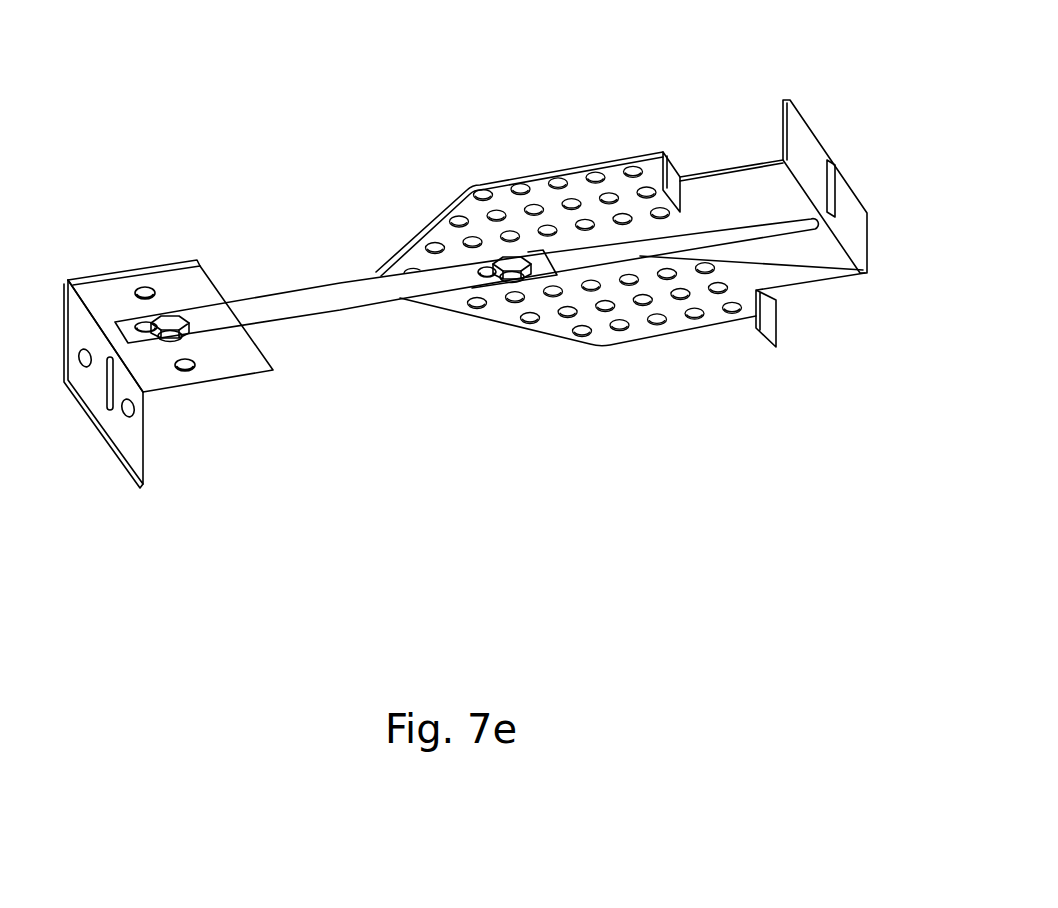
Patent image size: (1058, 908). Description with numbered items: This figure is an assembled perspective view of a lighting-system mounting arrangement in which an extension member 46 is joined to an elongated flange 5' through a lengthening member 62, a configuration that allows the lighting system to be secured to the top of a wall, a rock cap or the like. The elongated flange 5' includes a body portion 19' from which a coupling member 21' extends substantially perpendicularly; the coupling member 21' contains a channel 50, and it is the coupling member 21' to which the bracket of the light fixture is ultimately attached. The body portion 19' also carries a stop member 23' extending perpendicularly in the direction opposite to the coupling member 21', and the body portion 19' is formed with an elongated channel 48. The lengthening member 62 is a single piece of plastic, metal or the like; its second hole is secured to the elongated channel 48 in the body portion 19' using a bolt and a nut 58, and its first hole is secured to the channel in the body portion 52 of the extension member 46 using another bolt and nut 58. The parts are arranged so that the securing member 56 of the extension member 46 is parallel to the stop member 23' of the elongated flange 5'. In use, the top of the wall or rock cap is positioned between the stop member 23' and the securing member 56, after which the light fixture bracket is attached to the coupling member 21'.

The extension member 46 is at (214, 341).
The body portion 52 is at (245, 360).
The securing member 56 is at (122, 425).
The lengthening member 62 is at (338, 298).
The nut 58 is at (188, 338).
The elongated flange 5' is at (512, 203).
The stop member 23' is at (706, 147).
The elongated channel 48 is at (750, 232).
The coupling member 21' is at (825, 188).
The channel 50 is at (835, 216).
The body portion 19' is at (588, 353).